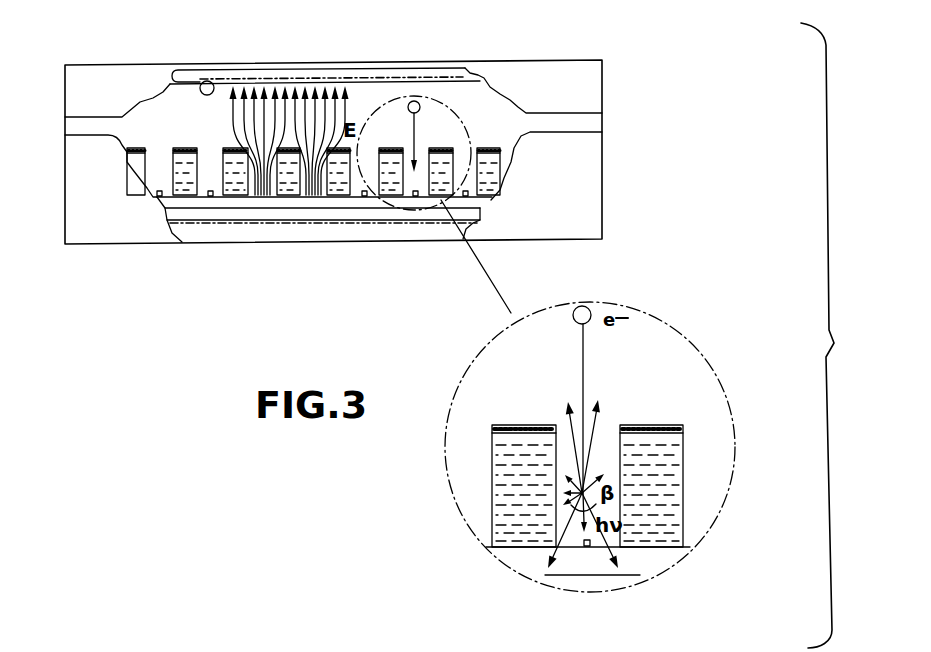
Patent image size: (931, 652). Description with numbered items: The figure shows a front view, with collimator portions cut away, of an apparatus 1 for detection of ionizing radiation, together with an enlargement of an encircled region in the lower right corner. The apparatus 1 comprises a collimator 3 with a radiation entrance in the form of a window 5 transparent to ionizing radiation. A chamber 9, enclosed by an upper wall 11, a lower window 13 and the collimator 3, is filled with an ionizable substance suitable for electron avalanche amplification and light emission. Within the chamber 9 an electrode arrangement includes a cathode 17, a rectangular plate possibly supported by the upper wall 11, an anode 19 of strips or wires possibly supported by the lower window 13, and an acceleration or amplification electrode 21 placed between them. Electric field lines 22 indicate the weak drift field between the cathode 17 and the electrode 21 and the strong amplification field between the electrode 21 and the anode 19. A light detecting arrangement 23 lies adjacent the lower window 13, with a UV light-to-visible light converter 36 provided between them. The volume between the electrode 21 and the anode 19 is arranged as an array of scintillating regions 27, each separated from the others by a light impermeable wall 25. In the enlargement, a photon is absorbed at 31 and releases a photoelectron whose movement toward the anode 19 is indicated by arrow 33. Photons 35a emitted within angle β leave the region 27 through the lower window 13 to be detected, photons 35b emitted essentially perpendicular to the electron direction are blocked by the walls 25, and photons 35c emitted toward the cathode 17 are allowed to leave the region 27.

The apparatus 1 is at (531, 40).
The collimator 3 is at (96, 80).
The window 5 is at (77, 128).
The chamber 9 is at (170, 107).
The upper wall 11 is at (440, 67).
The lower window 13 is at (200, 207).
The cathode 17 is at (205, 81).
The anode 19 is at (359, 188).
The acceleration or amplification electrode 21 is at (488, 145).
The electric field lines 22 is at (357, 108).
The light detecting arrangement 23 is at (280, 232).
The light impermeable wall 25 is at (238, 188).
The scintillating or fluorescing region 27 is at (212, 164).
The absorption point 31 is at (584, 306).
The arrow 33 is at (416, 120).
The photons emitted within angle β 35a is at (567, 540).
The photons emitted perpendicular to electron direction 35b is at (580, 462).
The photons emitted towards cathode 35c is at (599, 421).
The UV light-to-visible light converter 36 is at (328, 213).